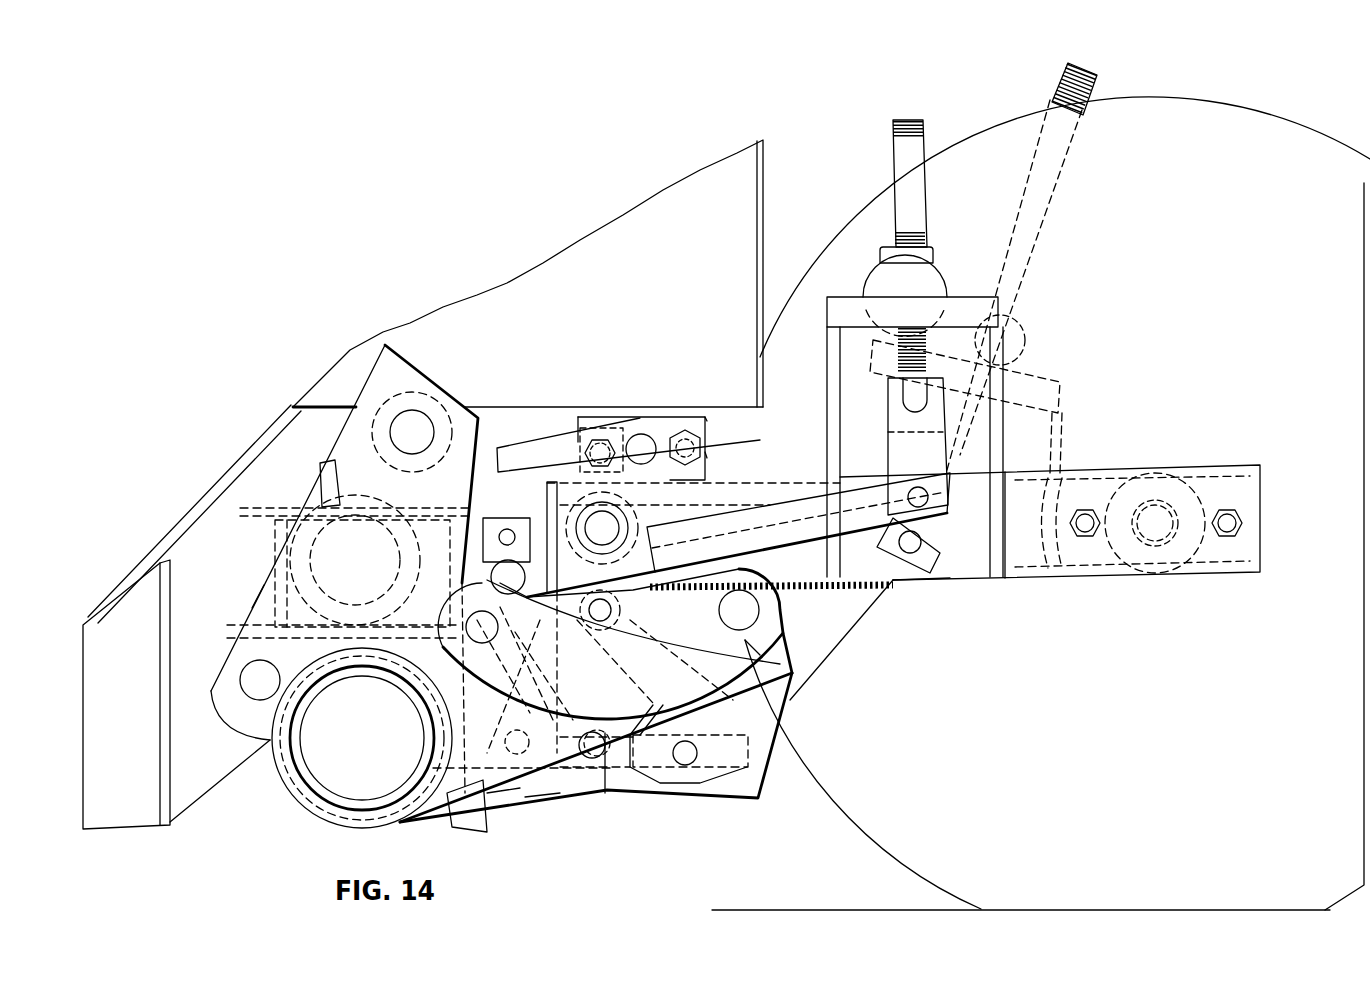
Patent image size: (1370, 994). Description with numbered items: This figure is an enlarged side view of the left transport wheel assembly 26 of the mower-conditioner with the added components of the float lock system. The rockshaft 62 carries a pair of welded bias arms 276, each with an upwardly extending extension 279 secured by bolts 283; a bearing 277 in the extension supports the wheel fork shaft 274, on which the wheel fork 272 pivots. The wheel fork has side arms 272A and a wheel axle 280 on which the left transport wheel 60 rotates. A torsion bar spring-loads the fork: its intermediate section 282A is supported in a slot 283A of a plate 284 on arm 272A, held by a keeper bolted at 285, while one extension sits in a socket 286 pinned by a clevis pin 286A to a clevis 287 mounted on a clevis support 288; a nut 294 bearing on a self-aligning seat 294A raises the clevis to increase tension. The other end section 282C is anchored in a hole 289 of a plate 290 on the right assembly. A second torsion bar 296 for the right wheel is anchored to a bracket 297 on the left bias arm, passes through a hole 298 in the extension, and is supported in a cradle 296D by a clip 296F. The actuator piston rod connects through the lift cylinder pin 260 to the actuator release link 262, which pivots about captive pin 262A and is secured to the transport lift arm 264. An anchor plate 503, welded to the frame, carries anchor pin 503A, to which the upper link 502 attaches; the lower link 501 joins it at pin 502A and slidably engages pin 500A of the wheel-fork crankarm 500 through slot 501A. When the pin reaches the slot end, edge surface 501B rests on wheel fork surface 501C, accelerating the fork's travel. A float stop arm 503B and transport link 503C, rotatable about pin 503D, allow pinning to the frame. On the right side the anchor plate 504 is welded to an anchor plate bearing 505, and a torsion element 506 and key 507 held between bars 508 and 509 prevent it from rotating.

The left transport wheel assembly 26 is at (659, 277).
The left transport wheel 60 is at (862, 818).
The rockshaft 62 is at (300, 770).
The lift cylinder pin 260 is at (759, 611).
The actuator release link 262 is at (776, 634).
The captive pin 262A is at (455, 660).
The transport lift arm 264 is at (791, 684).
The wheel fork 272 is at (987, 575).
The side arm 272A is at (933, 583).
The wheel fork shaft 274 is at (593, 515).
The bias arm 276 is at (332, 823).
The bearing 277 is at (617, 530).
The extension 279 is at (700, 418).
The wheel axle 280 is at (1137, 562).
The intermediate section 282A is at (506, 542).
The end section 282C is at (488, 830).
The bolt 283 is at (605, 793).
The slot 283A is at (470, 572).
The plate 284 is at (532, 487).
The bolt 285 is at (487, 644).
The socket 286 is at (770, 556).
The clevis pin 286A is at (925, 525).
The clevis 287 is at (893, 128).
The clevis support 288 is at (827, 328).
The hole 289 is at (490, 803).
The plate 290 is at (537, 787).
The nut 294 is at (935, 247).
The self-aligning seat 294A is at (940, 274).
The torsion bar 296 is at (633, 428).
The cradle 296D is at (705, 455).
The clip 296F is at (707, 420).
The anchor 297 is at (325, 470).
The hole 298 is at (647, 435).
The wheel-fork crankarm 500 is at (852, 630).
The pin 500A is at (686, 742).
The lower link 501 is at (737, 800).
The slot 501A is at (648, 712).
The edge surface 501B is at (594, 608).
The wheel fork surface 501C is at (610, 607).
The upper link 502 is at (470, 637).
The pin 502A is at (613, 718).
The anchor plate 503 is at (210, 511).
The anchor pin 503A is at (355, 560).
The float stop arm 503B is at (421, 372).
The transport link 503C is at (481, 413).
The pin 503D is at (428, 416).
The anchor plate 504 is at (268, 606).
The anchor plate bearing 505 is at (307, 800).
The torsion element 506 is at (303, 573).
The key 507 is at (275, 542).
The bar 508 is at (258, 508).
The bar 509 is at (232, 635).